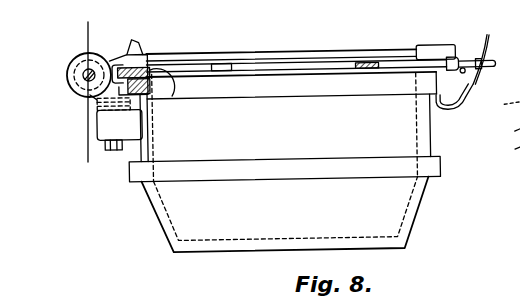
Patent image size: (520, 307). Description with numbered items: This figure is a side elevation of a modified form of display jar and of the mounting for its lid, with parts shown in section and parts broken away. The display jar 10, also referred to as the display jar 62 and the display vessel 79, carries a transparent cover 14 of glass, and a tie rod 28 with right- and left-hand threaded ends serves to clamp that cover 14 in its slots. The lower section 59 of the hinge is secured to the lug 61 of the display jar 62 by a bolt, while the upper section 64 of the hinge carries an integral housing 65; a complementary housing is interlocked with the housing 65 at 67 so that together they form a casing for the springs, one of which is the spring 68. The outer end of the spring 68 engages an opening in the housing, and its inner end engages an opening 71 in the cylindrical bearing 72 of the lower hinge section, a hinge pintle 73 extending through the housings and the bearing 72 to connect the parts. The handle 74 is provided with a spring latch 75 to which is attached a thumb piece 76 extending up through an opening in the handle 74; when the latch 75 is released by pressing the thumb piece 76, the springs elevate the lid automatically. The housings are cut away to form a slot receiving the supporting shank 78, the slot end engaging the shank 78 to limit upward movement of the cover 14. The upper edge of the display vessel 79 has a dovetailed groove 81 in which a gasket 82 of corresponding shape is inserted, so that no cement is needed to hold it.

The display jar 10 is at (89, 96).
The transparent cover 14 is at (296, 50).
The tie rod 28 is at (333, 50).
The lower section of the hinge 59 is at (97, 96).
The lug 61 is at (97, 126).
The display jar 62 is at (153, 216).
The upper section of the hinge 64 is at (122, 47).
The housing 65 is at (78, 54).
The interlock 67 is at (109, 56).
The spring 68 is at (507, 149).
The opening 71 is at (500, 104).
The cylindrical bearing 72 is at (510, 131).
The hinge pintle 73 is at (82, 72).
The handle 74 is at (486, 66).
The spring latch 75 is at (441, 110).
The thumb piece 76 is at (488, 42).
The supporting shank 78 is at (90, 94).
The display vessel 79 is at (253, 74).
The dovetailed groove 81 is at (170, 86).
The gasket 82 is at (168, 50).